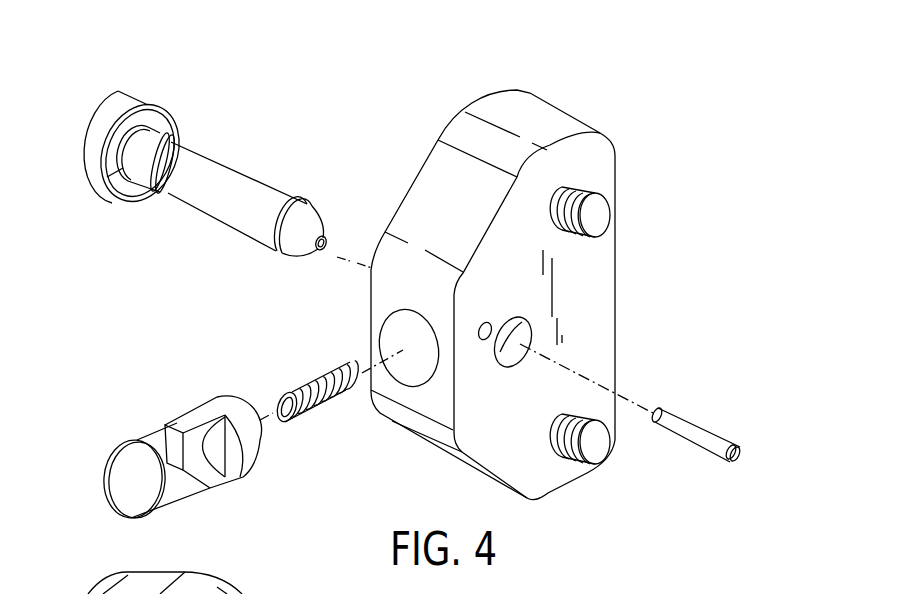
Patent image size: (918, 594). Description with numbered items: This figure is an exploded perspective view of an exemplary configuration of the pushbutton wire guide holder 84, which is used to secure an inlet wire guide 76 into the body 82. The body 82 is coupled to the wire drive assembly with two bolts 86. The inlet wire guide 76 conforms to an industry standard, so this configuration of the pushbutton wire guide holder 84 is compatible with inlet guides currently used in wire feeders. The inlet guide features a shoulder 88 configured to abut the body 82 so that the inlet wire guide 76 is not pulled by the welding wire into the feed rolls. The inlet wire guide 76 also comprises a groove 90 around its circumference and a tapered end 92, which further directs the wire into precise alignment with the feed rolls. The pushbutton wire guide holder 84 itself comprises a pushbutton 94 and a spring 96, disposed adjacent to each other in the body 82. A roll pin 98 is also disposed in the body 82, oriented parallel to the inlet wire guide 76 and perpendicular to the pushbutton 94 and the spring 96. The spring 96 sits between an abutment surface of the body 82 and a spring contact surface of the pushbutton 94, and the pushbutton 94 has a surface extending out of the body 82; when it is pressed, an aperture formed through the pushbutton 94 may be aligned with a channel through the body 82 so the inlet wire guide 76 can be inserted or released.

The inlet wire guide 76 is at (263, 157).
The body 82 is at (530, 103).
The pushbutton wire guide holder 84 is at (207, 332).
The bolts 86 is at (602, 222).
The shoulder 88 is at (153, 112).
The groove 90 is at (180, 147).
The tapered end 92 is at (308, 226).
The pushbutton 94 is at (180, 497).
The spring 96 is at (327, 408).
The roll pin 98 is at (702, 435).